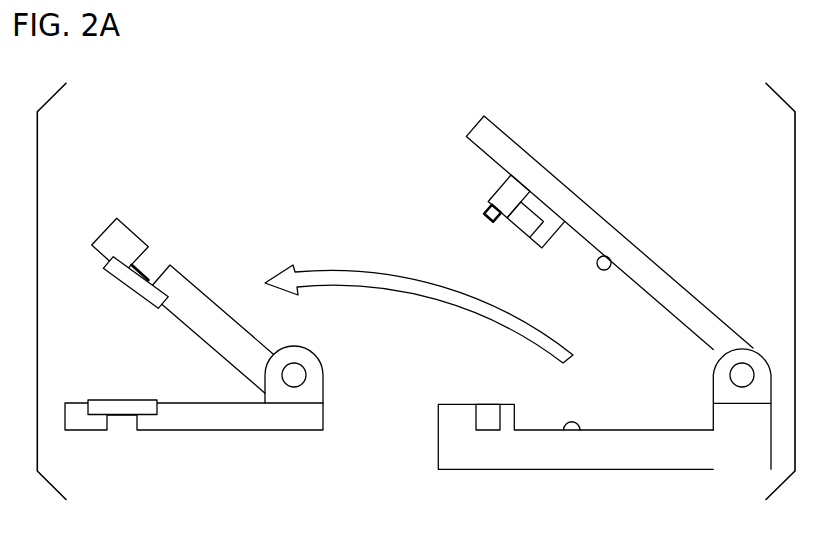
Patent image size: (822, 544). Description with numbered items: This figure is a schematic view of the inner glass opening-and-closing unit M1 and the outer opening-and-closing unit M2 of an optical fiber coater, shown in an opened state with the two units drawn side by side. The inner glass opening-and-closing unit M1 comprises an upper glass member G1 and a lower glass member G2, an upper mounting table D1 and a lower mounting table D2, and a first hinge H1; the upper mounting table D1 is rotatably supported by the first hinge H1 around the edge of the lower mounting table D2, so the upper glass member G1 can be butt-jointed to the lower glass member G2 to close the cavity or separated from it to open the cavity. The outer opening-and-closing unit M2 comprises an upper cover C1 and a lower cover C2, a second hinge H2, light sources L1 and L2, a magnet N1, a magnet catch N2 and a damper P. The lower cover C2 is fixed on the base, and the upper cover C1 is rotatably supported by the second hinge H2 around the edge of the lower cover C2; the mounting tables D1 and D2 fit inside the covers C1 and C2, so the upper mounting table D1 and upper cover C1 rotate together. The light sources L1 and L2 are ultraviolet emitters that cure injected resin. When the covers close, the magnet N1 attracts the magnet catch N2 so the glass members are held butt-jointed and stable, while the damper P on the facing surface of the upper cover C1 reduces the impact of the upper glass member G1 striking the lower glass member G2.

The inner glass opening-and-closing unit M1 is at (177, 237).
The upper mounting table D1 is at (187, 282).
The upper glass member G1 is at (120, 280).
The first hinge H1 is at (321, 363).
The lower mounting table D2 is at (212, 431).
The lower glass member G2 is at (130, 400).
The outer opening-and-closing unit M2 is at (614, 152).
The upper cover C1 is at (652, 258).
The magnet N1 is at (528, 219).
The damper P is at (484, 210).
The light source L1 is at (610, 270).
The second hinge H2 is at (760, 362).
The lower cover C2 is at (588, 470).
The magnet catch N2 is at (488, 415).
The light source L2 is at (576, 421).